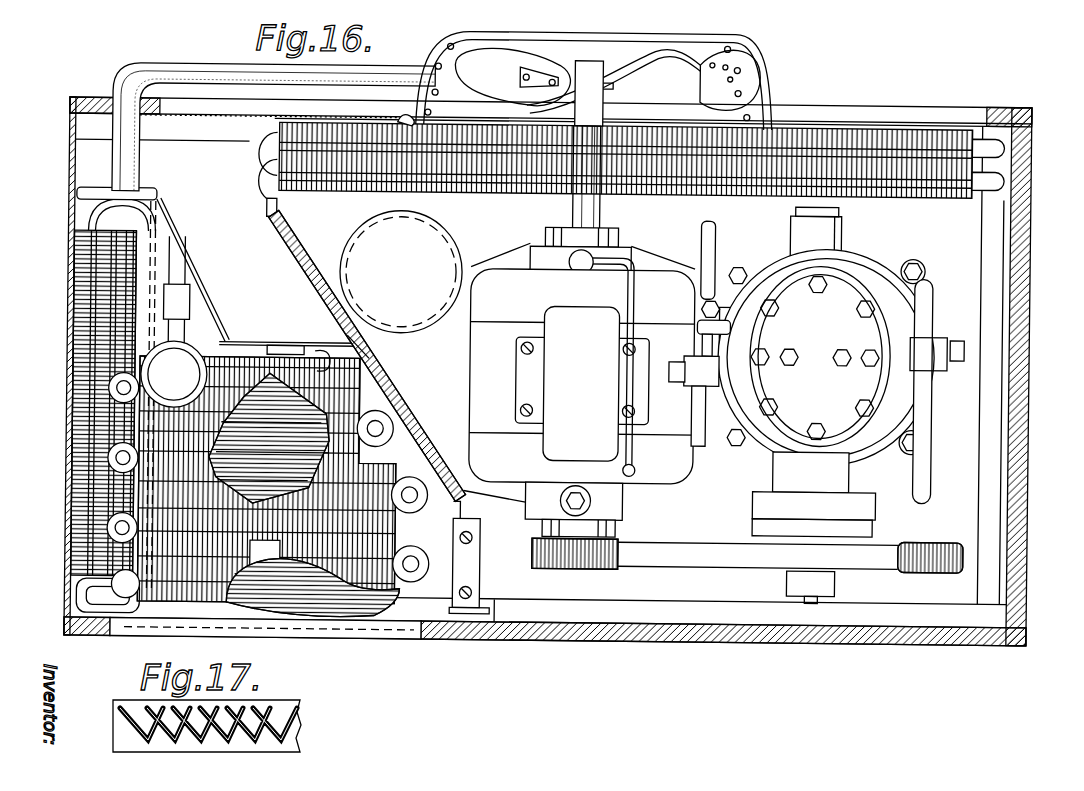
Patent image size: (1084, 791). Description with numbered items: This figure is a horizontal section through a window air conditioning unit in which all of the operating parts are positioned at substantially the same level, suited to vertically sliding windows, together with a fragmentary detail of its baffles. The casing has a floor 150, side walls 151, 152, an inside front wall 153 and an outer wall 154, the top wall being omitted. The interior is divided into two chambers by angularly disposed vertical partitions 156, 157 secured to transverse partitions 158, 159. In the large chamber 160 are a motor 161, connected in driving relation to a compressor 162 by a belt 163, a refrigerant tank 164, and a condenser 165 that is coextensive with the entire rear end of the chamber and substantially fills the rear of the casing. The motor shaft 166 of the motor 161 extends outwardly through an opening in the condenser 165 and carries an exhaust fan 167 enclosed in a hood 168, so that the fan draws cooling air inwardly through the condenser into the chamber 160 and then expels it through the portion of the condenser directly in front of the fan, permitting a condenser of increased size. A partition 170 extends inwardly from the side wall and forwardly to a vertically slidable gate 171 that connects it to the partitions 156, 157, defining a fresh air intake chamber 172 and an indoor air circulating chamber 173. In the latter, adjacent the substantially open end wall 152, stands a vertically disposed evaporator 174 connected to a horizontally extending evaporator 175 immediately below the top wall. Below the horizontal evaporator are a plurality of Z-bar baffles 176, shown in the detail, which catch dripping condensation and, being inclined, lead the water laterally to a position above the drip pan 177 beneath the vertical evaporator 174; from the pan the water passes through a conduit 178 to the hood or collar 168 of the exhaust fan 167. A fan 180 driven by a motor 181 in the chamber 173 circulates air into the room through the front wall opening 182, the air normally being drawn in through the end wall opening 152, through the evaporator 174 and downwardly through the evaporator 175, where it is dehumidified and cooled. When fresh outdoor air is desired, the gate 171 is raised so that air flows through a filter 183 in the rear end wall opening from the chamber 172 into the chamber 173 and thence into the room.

In FIG. 16, the floor 150 is at (645, 578).
In FIG. 16, the side wall 151 is at (1020, 442).
In FIG. 16, the side wall 152 is at (72, 163).
In FIG. 16, the inside front wall 153 is at (708, 642).
In FIG. 16, the outer wall 154 is at (997, 106).
In FIG. 16, the vertical partition 156 is at (370, 363).
In FIG. 16, the vertical partition 157 is at (303, 250).
In FIG. 16, the transverse partition 158 is at (463, 556).
In FIG. 16, the transverse partition 159 is at (270, 214).
In FIG. 16, the large chamber 160 is at (689, 370).
In FIG. 16, the motor 161 is at (662, 278).
In FIG. 16, the compressor 162 is at (748, 262).
In FIG. 16, the belt 163 is at (762, 548).
In FIG. 16, the refrigerant tank 164 is at (447, 248).
In FIG. 16, the condenser 165 is at (835, 130).
In FIG. 16, the motor shaft 166 is at (592, 206).
In FIG. 16, the exhaust fan 167 is at (688, 54).
In FIG. 16, the hood 168 is at (750, 68).
In FIG. 16, the partition 170 is at (188, 254).
In FIG. 16, the vertically slidable gate 171 is at (292, 340).
In FIG. 16, the fresh air intake chamber 172 is at (146, 184).
In FIG. 16, the indoor air circulating chamber 173 is at (318, 396).
In FIG. 16, the vertically disposed evaporator 174 is at (88, 330).
In FIG. 16, the horizontally extending evaporator 175 is at (385, 425).
In FIG. 16, the Z-bar baffles 176 is at (378, 440).
In FIG. 17, the Z-bar baffles 176 is at (275, 737).
In FIG. 16, the drip pan 177 is at (195, 290).
In FIG. 16, the conduit 178 is at (192, 61).
In FIG. 16, the fan 180 is at (347, 612).
In FIG. 16, the motor 181 is at (296, 580).
In FIG. 16, the front wall opening 182 is at (416, 634).
In FIG. 16, the filter 183 is at (190, 117).